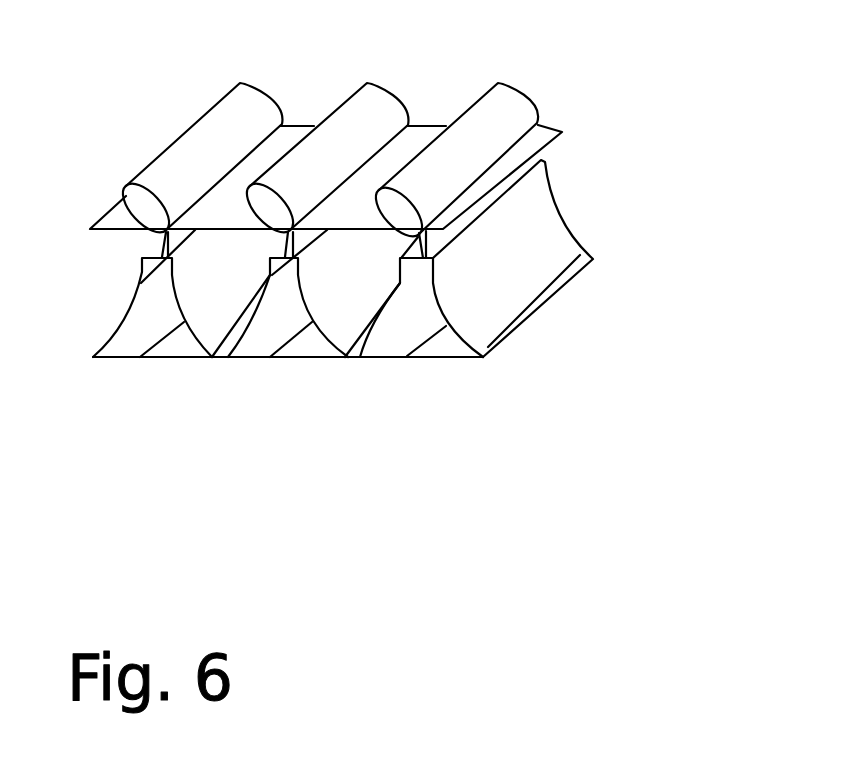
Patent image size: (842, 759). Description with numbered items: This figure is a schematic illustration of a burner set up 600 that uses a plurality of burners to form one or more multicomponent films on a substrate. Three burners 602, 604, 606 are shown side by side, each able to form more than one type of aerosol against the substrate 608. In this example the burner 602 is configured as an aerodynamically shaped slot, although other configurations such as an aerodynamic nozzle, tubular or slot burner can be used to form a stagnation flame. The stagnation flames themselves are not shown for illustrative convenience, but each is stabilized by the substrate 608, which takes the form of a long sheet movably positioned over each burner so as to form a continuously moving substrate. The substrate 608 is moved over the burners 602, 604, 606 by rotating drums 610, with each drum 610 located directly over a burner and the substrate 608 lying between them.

The illumination/concentrator assembly 600 is at (108, 48).
The burner 602 is at (147, 333).
The burner 604 is at (287, 318).
The burner 606 is at (417, 315).
The substrate 608 is at (561, 131).
The rotating drums 610 is at (262, 80).